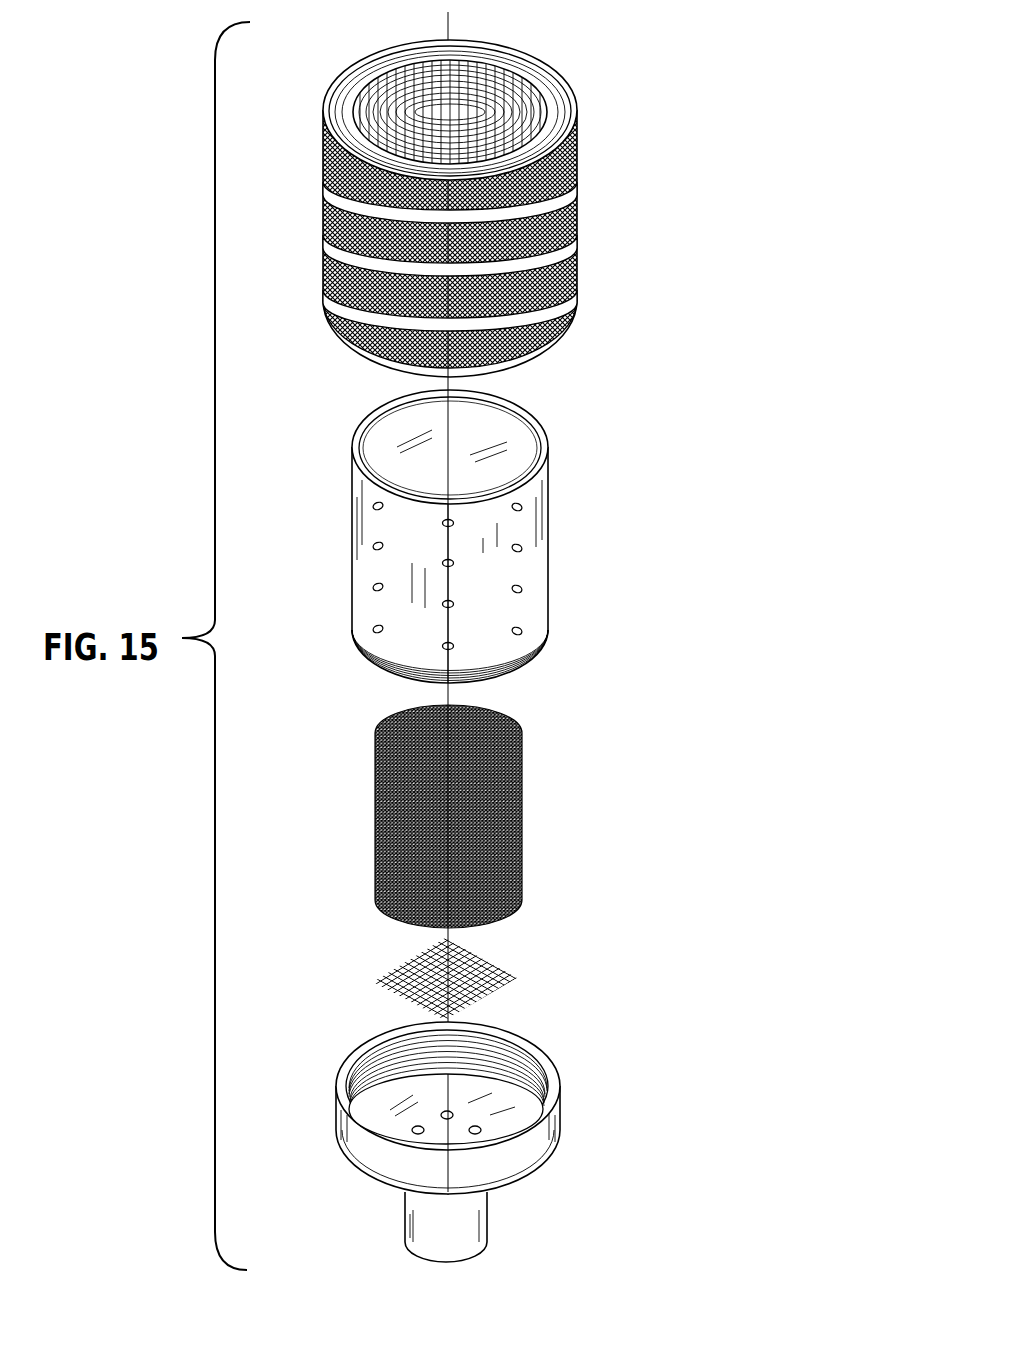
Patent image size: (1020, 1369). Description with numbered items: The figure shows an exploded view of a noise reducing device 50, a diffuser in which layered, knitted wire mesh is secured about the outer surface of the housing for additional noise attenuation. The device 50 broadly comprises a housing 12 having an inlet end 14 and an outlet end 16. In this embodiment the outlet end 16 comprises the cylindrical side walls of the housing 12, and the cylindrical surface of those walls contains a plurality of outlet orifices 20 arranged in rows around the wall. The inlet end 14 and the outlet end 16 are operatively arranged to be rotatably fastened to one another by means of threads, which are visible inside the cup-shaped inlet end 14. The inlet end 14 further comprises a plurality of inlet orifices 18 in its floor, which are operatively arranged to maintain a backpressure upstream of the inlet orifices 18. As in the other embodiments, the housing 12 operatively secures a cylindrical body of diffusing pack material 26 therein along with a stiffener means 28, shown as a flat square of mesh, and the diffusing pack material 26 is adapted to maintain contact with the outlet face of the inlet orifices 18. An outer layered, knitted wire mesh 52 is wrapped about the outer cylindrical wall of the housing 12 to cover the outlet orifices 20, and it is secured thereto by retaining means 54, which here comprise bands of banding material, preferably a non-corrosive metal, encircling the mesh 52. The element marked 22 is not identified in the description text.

The noise reducing device 50 is at (735, 88).
The outer layered, knitted wire mesh 52 is at (495, 208).
The retaining means 54 is at (578, 168).
The housing 12 is at (460, 550).
The outlet end 16 is at (565, 492).
The outlet orifices 20 is at (373, 507).
The diffusing pack material 26 is at (540, 790).
The stiffener means 28 is at (530, 963).
The base cap 22 is at (465, 1089).
The inlet orifices 18 is at (445, 1112).
The inlet end 14 is at (512, 1240).